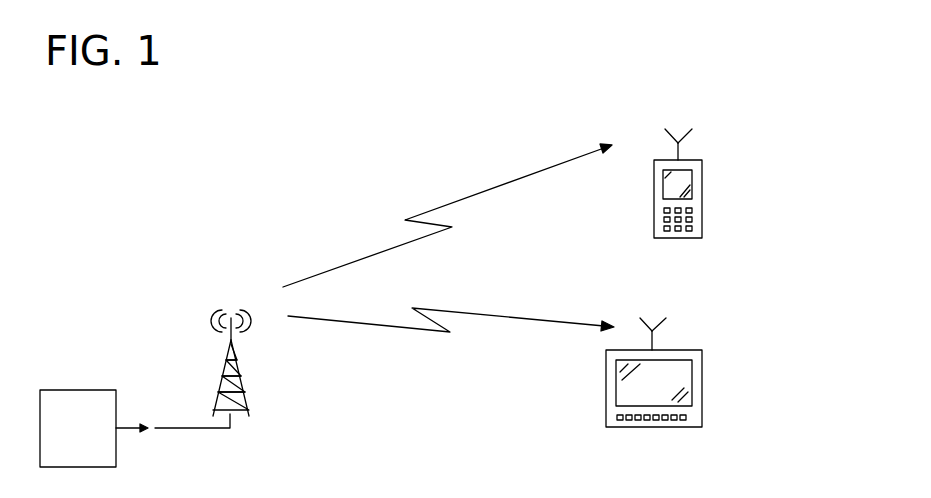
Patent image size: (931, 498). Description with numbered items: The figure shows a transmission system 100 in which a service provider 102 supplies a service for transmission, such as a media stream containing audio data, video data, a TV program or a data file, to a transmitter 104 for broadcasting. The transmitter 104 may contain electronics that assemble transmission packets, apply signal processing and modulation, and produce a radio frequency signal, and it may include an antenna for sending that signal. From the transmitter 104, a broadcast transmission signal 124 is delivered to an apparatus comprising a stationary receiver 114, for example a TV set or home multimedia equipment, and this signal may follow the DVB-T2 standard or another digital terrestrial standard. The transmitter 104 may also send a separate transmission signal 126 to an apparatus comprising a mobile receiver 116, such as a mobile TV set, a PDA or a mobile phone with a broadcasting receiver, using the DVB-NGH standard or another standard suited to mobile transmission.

The transmission system 100 is at (100, 170).
The service provider 102 is at (73, 388).
The transmitter 104 is at (244, 368).
The stationary receiver 114 is at (710, 388).
The mobile receiver 116 is at (711, 197).
The broadcast transmission signal 124 is at (476, 307).
The transmission signal 126 is at (441, 192).